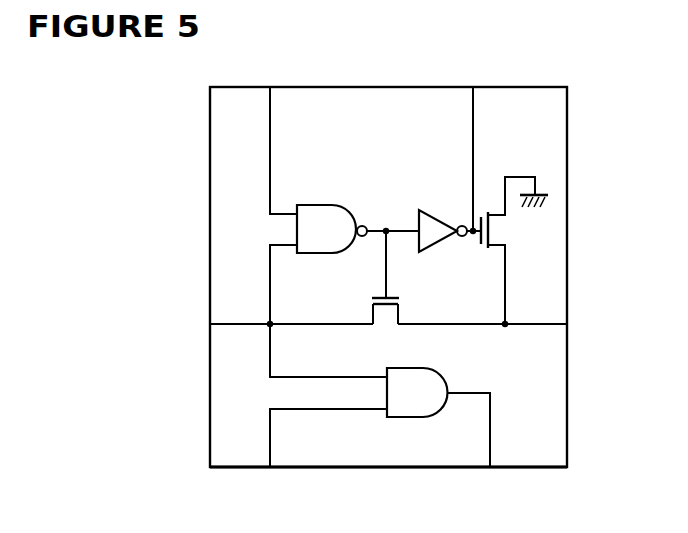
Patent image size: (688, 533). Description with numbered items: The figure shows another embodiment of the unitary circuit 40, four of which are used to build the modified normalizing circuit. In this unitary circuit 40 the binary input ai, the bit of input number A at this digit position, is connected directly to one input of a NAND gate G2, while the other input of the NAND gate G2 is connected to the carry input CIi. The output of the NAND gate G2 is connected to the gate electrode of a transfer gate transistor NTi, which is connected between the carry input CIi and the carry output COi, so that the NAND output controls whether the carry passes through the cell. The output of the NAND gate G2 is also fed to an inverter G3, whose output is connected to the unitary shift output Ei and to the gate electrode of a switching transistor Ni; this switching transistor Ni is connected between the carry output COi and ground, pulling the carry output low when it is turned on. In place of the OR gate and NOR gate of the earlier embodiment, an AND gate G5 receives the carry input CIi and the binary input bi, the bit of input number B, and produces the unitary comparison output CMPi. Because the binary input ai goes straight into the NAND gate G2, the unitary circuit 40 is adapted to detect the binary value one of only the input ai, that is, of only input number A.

The unitary circuit 40 is at (372, 87).
The NAND gate G2 is at (358, 229).
The inverter G3 is at (450, 222).
The AND gate G5 is at (417, 392).
The switching transistor Ni is at (514, 250).
The transfer gate transistor NTi is at (403, 277).
The binary input ai is at (278, 136).
The binary input bi is at (324, 457).
The unitary shift output Ei is at (477, 146).
The carry input CIi is at (277, 311).
The carry output COi is at (503, 328).
The unitary comparison output CMPi is at (482, 449).